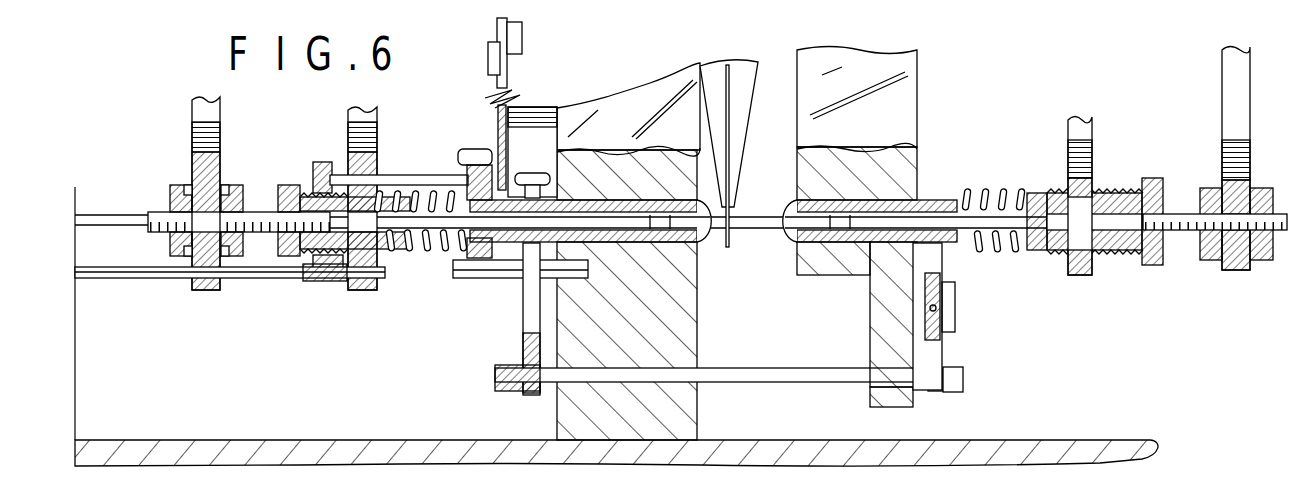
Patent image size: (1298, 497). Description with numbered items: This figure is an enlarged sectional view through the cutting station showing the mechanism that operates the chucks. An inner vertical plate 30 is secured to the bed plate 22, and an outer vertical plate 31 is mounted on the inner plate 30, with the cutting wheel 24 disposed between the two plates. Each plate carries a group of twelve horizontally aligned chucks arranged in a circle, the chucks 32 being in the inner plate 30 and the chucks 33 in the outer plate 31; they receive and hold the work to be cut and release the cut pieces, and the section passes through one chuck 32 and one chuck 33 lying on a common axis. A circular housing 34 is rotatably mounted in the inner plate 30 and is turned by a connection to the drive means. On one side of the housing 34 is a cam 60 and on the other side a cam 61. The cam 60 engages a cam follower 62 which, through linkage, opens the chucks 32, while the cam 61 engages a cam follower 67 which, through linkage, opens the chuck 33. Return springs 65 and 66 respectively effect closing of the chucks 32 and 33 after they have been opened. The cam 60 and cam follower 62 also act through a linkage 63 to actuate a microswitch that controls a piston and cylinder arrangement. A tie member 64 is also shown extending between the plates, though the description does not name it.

The bed plate 22 is at (994, 456).
The cutting wheel 24 is at (746, 158).
The inner vertical plate 30 is at (636, 110).
The outer vertical plate 31 is at (905, 120).
The chucks 32 is at (703, 245).
The chucks 33 is at (800, 244).
The circular housing 34 is at (536, 108).
The cam 60 is at (488, 60).
The cam 61 is at (522, 34).
The cam follower 62 is at (464, 152).
The linkage 63 is at (286, 288).
The tie rod 64 is at (806, 332).
The return spring 65 is at (436, 257).
The return spring 66 is at (1003, 254).
The cam follower 67 is at (527, 172).